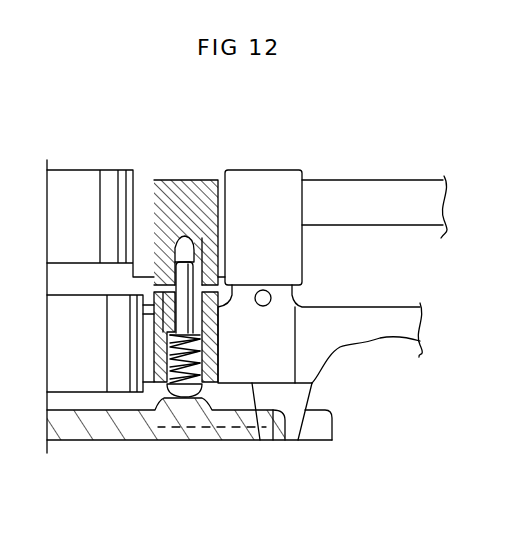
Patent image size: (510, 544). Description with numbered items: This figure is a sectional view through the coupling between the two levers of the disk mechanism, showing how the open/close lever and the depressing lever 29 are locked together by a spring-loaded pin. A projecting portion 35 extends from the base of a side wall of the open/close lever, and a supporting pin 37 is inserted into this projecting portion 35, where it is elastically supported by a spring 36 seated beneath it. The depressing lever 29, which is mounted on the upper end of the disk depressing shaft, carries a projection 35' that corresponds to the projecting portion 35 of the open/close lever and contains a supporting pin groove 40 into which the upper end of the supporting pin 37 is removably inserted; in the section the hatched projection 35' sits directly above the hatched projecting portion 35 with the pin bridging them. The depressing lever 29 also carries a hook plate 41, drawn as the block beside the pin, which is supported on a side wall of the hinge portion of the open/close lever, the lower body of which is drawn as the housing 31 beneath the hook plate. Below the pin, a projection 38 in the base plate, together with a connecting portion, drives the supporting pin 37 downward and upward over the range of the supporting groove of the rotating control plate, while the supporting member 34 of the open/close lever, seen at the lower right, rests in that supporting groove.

The depressing lever 29 is at (376, 190).
The hook plate 41 is at (292, 261).
The projection 35' is at (204, 192).
The supporting pin groove 40 is at (185, 247).
The supporting pin 37 is at (190, 283).
The spring 36 is at (196, 372).
The projecting portion 35 is at (140, 337).
The housing body 31 is at (400, 322).
The supporting member 34 is at (313, 397).
The projection 38 is at (172, 413).